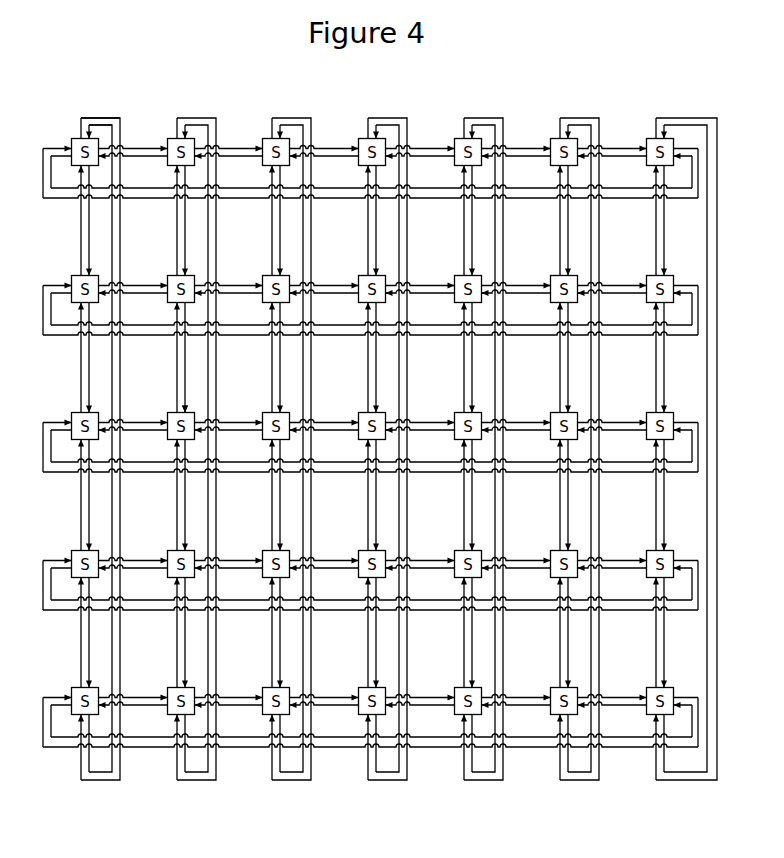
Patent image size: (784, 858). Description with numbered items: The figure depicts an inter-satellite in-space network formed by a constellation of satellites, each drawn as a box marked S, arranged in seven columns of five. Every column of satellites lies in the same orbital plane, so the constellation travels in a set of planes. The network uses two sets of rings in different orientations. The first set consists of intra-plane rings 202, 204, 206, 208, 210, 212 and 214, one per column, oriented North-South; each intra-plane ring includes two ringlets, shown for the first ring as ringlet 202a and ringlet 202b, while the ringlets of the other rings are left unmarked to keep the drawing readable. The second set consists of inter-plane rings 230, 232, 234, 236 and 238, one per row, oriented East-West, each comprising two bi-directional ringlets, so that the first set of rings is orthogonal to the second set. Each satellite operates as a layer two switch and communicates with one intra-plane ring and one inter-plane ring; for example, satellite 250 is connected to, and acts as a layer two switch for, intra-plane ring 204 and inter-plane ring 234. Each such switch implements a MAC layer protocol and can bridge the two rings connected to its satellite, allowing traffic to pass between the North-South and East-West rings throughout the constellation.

The intra-plane ring 202 is at (116, 117).
The ringlet 202a is at (95, 117).
The ringlet 202b is at (80, 125).
The intra-plane ring 204 is at (206, 118).
The intra-plane ring 206 is at (312, 117).
The intra-plane ring 208 is at (398, 117).
The intra-plane ring 210 is at (503, 117).
The intra-plane ring 212 is at (592, 117).
The intra-plane ring 214 is at (689, 117).
The inter-plane ring 230 is at (57, 199).
The inter-plane ring 232 is at (57, 336).
The inter-plane ring 234 is at (57, 473).
The inter-plane ring 236 is at (57, 611).
The inter-plane ring 238 is at (57, 748).
The satellite 250 is at (177, 409).